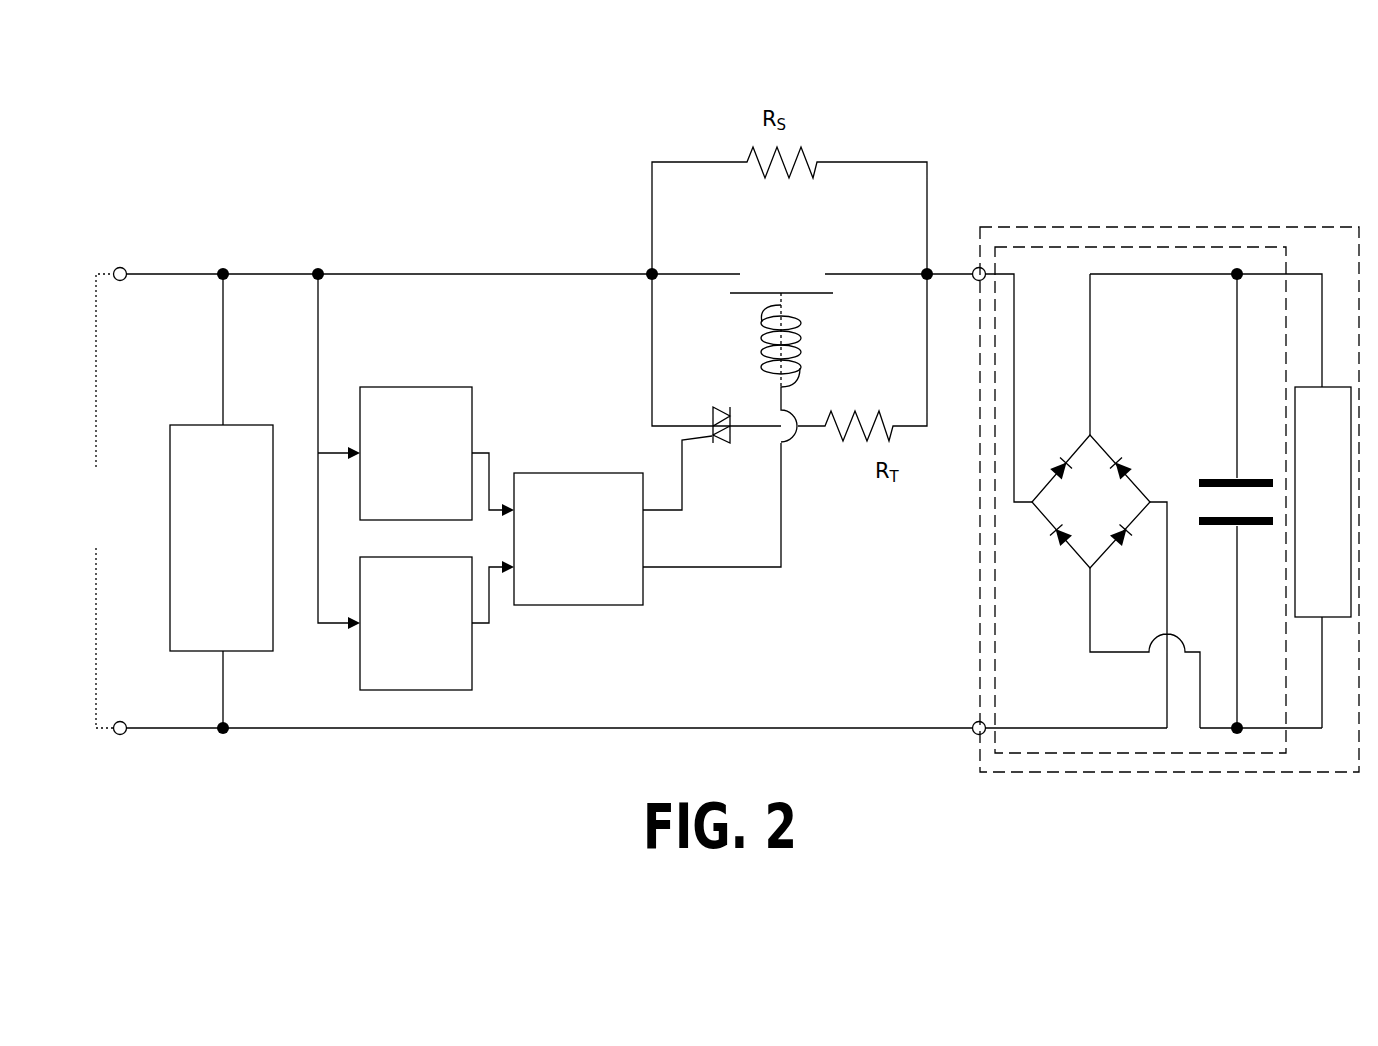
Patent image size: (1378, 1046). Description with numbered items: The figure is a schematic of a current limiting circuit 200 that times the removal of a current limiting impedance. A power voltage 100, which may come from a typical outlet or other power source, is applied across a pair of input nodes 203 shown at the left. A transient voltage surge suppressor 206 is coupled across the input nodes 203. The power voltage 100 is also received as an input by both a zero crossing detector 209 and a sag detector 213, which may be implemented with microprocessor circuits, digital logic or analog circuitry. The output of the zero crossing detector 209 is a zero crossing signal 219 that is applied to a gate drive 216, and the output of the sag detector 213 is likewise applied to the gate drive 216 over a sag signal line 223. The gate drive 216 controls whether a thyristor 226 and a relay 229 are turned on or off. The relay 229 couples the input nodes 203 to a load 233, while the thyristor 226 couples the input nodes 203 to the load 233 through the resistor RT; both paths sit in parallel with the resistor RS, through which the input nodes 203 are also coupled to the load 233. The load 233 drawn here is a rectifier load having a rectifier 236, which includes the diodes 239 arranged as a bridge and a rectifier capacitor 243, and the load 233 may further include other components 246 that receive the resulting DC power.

The power voltage 100 is at (97, 512).
The current limiting circuit 200 is at (330, 135).
The input nodes 203 is at (123, 266).
The transient voltage surge suppressor 206 is at (221, 501).
The zero crossing detector 209 is at (416, 453).
The sag detector 213 is at (416, 623).
The gate drive 216 is at (647, 520).
The zero crossing signal 219 is at (491, 473).
The sag signal line 223 is at (490, 626).
The thyristor 226 is at (723, 406).
The relay 229 is at (829, 324).
The load 233 is at (1075, 227).
The rectifier 236 is at (1157, 247).
The diodes 239 is at (1118, 438).
The rectifier capacitor 243 is at (1221, 467).
The other components 246 is at (1323, 502).